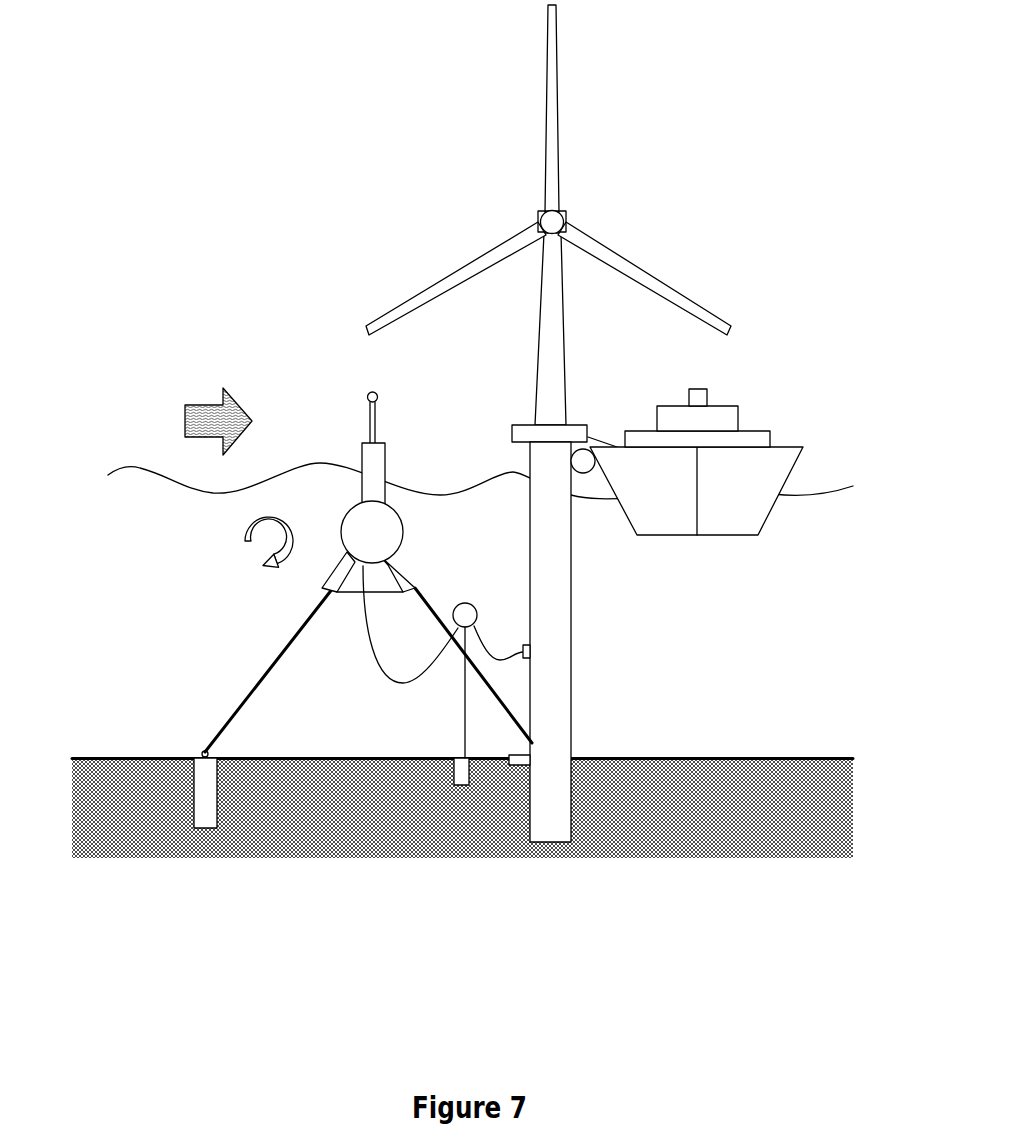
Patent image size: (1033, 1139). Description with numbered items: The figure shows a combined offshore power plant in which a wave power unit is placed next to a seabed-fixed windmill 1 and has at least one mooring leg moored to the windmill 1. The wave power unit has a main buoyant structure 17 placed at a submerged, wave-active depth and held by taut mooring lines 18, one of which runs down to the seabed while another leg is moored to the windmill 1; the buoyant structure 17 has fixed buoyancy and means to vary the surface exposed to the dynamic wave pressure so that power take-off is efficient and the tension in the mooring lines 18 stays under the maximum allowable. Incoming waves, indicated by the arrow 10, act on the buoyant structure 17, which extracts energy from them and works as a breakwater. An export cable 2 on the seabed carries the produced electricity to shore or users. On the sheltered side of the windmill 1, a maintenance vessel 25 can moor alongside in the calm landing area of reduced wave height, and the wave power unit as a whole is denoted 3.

The windmill 1 is at (551, 332).
The export cable 2 is at (307, 757).
The buoy 3 is at (422, 575).
The wave direction 10 is at (218, 415).
The main buoyant structure 17 is at (363, 528).
The taut mooring lines 18 is at (263, 677).
The maintenance vessel 25 is at (796, 426).